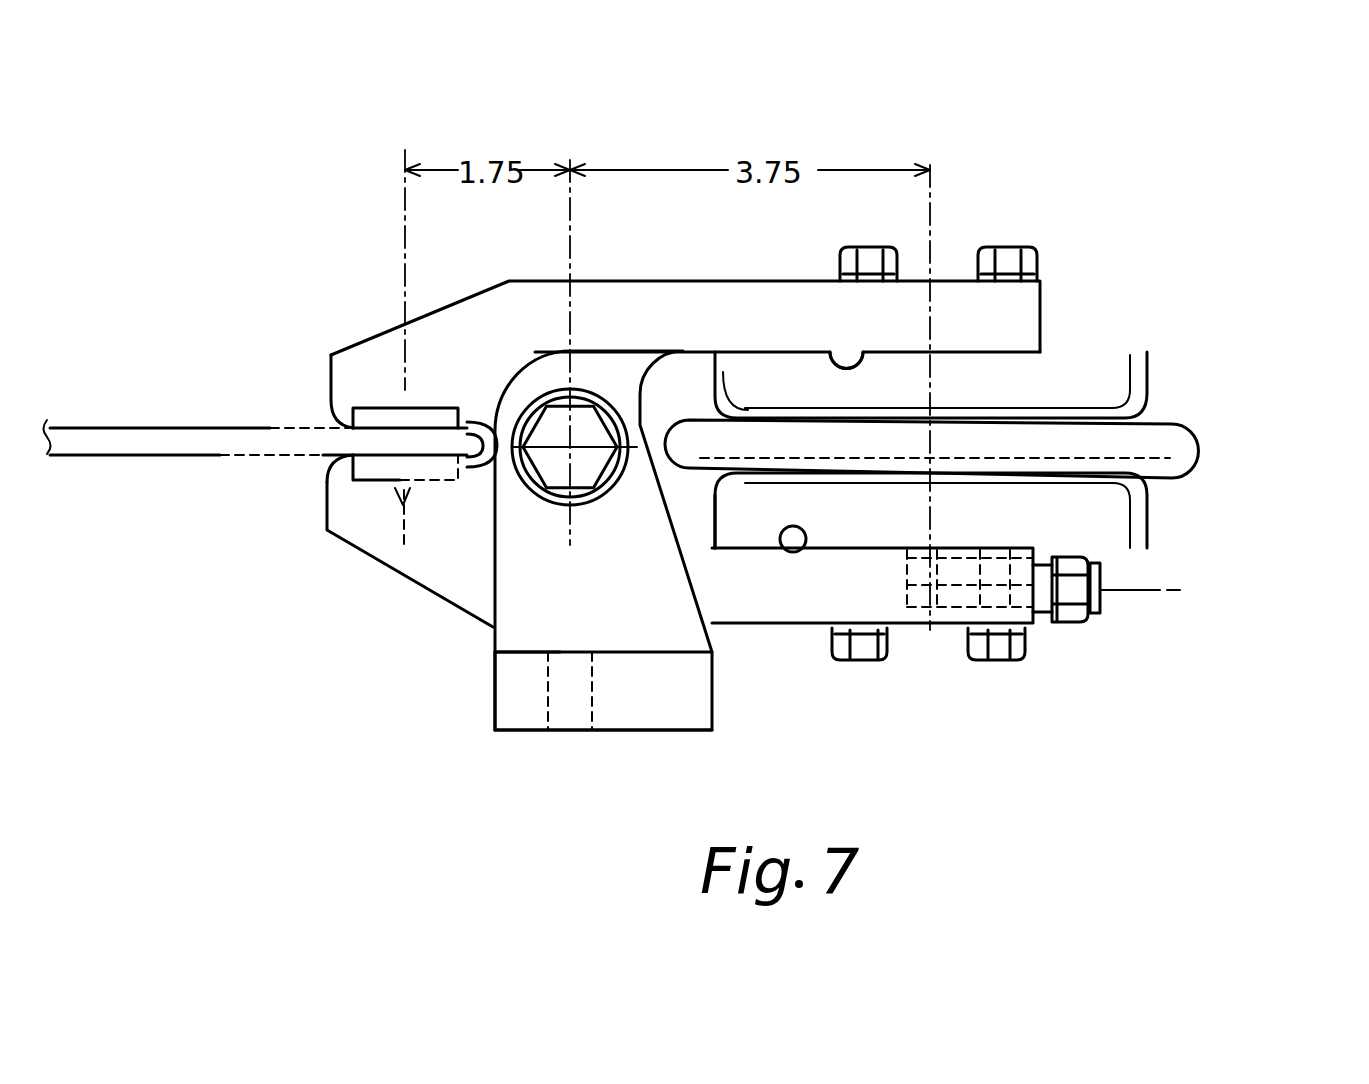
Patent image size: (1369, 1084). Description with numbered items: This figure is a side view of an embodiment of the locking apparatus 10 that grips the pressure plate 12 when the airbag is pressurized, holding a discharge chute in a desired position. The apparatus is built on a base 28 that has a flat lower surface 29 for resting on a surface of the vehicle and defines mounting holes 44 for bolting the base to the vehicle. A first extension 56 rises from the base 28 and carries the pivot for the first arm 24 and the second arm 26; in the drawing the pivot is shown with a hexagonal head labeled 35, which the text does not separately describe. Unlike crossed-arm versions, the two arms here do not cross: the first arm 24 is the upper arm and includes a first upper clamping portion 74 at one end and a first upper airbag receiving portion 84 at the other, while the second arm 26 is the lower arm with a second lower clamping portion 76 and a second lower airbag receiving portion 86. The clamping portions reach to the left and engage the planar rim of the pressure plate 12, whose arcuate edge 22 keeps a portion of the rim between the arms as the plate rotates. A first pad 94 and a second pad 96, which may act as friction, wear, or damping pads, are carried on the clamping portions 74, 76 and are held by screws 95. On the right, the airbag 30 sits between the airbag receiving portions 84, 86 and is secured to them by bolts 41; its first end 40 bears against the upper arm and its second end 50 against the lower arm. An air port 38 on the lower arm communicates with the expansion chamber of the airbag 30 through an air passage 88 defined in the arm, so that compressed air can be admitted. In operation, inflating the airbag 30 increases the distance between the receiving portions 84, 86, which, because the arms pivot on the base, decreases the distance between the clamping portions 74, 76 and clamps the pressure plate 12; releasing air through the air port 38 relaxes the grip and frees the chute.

The locking apparatus 10 is at (1188, 520).
The pressure plate 12 is at (152, 440).
The arcuate edge 22 is at (467, 600).
The first arm 24 is at (480, 317).
The second arm 26 is at (1040, 624).
The base 28 is at (683, 697).
The flat lower surface 29 is at (643, 733).
The airbag 30 is at (1153, 383).
The pivot bolt 35 is at (577, 420).
The air port 38 is at (1103, 597).
The first end 40 is at (760, 350).
The bolts 41 is at (980, 250).
The mounting holes 44 is at (563, 713).
The second end 50 is at (740, 550).
The first extension 56 is at (540, 617).
The first clamping portion 74 is at (350, 425).
The second clamping portion 76 is at (330, 452).
The first airbag receiving portion 84 is at (860, 354).
The second airbag receiving portion 86 is at (790, 552).
The air passage 88 is at (927, 597).
The first pad 94 is at (438, 407).
The screws 95 is at (430, 380).
The second pad 96 is at (340, 543).